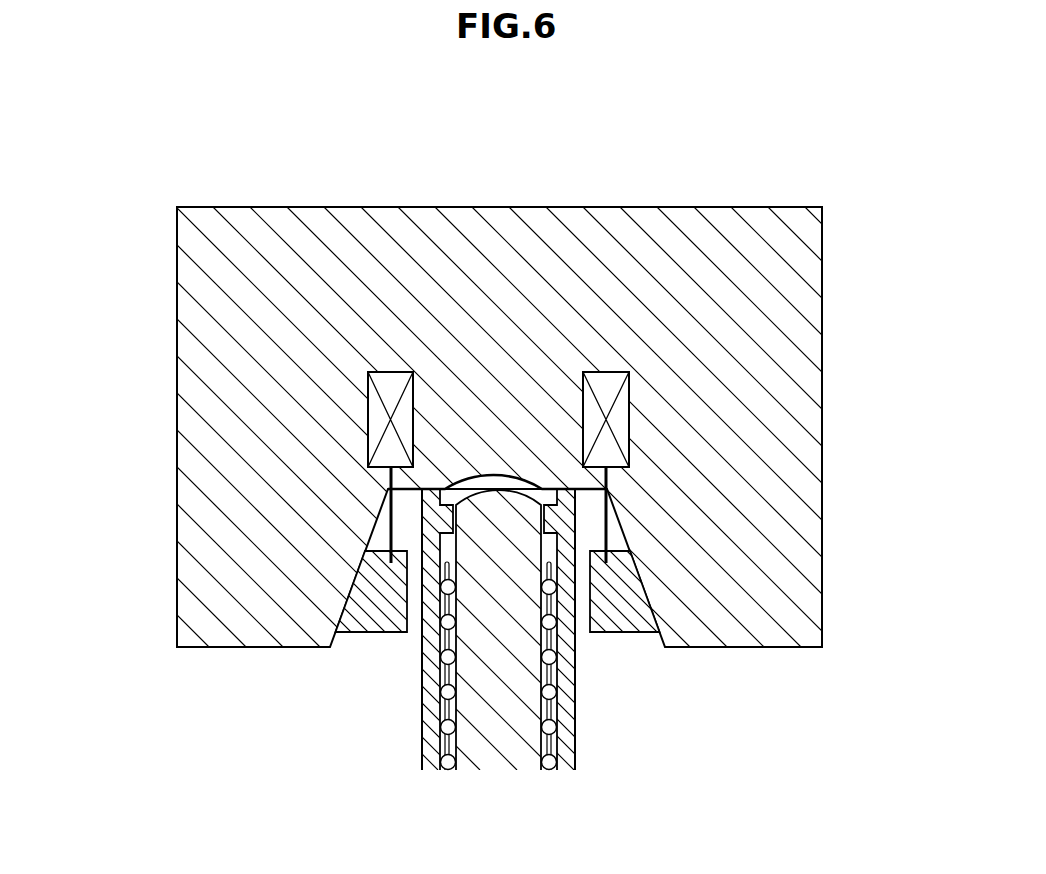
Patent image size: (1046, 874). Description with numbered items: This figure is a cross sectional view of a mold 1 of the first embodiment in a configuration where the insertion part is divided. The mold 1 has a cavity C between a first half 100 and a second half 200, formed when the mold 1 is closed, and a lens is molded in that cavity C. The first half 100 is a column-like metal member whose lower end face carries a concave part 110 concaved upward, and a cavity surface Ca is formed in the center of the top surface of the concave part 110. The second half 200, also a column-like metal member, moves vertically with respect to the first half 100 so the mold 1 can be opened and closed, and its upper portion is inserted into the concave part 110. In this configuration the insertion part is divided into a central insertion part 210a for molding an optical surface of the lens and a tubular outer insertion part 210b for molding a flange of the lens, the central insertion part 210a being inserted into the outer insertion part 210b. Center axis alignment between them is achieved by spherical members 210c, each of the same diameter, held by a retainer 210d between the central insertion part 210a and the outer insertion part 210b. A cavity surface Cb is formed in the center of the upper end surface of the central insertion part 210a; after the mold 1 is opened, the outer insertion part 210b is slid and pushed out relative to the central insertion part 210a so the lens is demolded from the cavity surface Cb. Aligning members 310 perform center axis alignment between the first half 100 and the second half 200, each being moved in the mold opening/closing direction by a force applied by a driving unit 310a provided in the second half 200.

The mold 1 is at (849, 233).
The first half 100 is at (825, 250).
The concave part 110 is at (358, 640).
The second half 200 is at (578, 732).
The central insertion part 210a is at (520, 763).
The outer insertion part 210b is at (431, 756).
The spherical members 210c is at (438, 674).
The retainer 210d is at (445, 748).
The aligning members 310 is at (383, 593).
The driving unit 310a is at (368, 428).
The cavity C is at (503, 478).
The cavity surface Ca is at (505, 483).
The cavity surface Cb is at (478, 488).